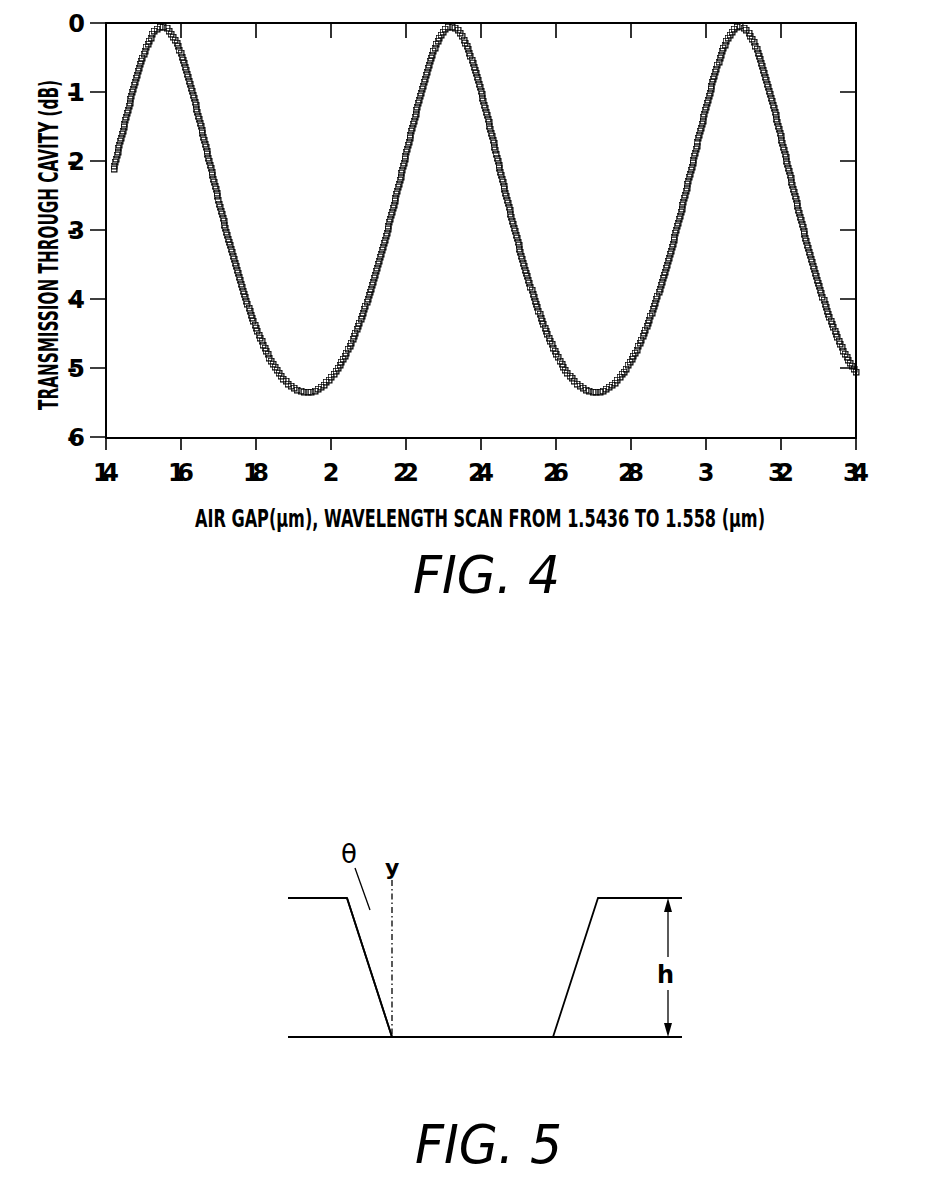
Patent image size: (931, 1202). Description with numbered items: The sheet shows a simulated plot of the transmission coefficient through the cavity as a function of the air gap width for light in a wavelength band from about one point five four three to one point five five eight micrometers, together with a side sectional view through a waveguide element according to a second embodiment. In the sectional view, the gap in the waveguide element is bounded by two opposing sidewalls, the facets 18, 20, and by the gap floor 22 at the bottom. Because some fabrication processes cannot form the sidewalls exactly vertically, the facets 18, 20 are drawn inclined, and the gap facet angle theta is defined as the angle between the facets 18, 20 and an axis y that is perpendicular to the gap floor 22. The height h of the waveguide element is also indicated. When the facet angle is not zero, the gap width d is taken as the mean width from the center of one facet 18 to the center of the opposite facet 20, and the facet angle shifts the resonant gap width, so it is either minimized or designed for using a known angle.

The facet 18 is at (368, 955).
The facet 20 is at (513, 935).
The gap floor 22 is at (462, 1038).